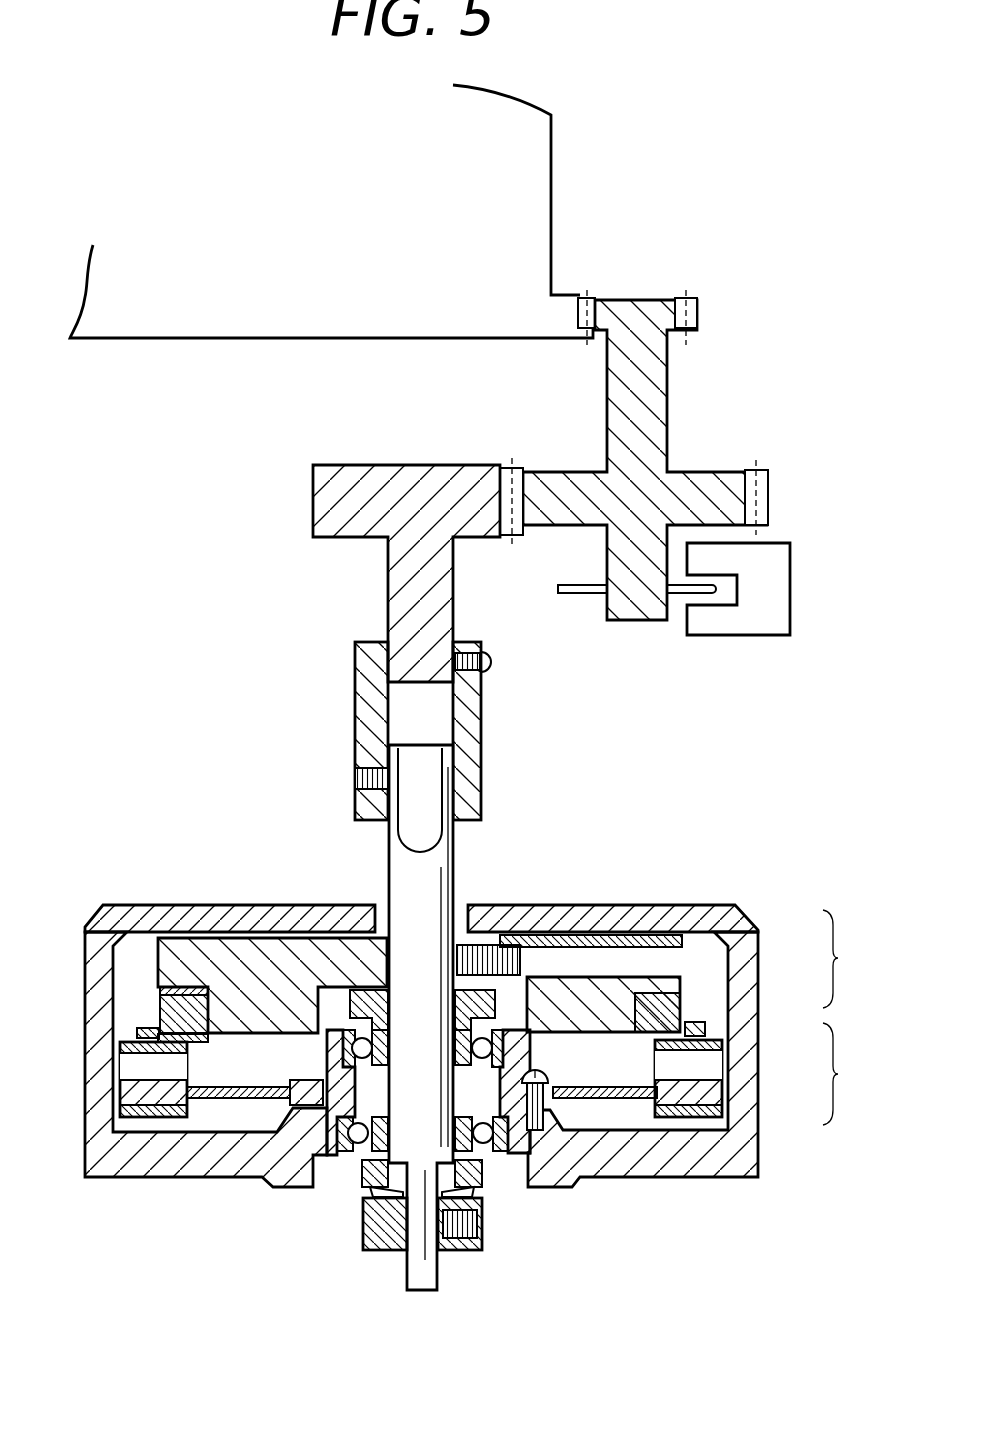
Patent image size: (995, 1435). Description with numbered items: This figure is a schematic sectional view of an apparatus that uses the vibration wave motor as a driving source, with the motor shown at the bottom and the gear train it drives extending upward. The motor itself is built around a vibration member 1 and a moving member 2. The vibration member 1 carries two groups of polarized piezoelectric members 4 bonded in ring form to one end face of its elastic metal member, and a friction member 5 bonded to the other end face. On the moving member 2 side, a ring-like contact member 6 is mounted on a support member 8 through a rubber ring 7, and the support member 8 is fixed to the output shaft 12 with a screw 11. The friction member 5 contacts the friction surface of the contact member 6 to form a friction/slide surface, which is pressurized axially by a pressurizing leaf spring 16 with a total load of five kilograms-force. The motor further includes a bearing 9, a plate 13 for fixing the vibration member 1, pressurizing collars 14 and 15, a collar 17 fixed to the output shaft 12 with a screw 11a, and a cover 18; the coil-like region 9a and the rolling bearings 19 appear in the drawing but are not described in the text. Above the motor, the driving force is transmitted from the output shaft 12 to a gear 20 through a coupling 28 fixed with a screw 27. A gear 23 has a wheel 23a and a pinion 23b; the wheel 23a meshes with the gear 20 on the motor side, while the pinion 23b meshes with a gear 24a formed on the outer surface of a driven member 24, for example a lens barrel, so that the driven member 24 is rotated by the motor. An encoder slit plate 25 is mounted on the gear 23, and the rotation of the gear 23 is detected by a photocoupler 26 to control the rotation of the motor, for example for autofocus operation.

The vibration member 1 is at (841, 1074).
The moving member 2 is at (841, 959).
The piezoelectric members 4 is at (727, 1117).
The friction member 5 is at (713, 1045).
The contact member 6 is at (700, 1028).
The rubber ring 7 is at (617, 982).
The support member 8 is at (683, 948).
The bearing 9 is at (708, 1082).
The coil 9a is at (130, 1063).
The screw 11 is at (500, 962).
The screw 11a is at (467, 1240).
The output shaft 12 is at (440, 853).
The plate 13 is at (702, 1163).
The pressurizing collar 14 is at (368, 992).
The pressurizing collar 15 is at (475, 1172).
The pressurizing leaf spring 16 is at (473, 1190).
The collar 17 is at (380, 1240).
The cover 18 is at (645, 905).
The bearing 19 is at (343, 1030).
The gear 20 is at (405, 480).
The gear 23 is at (658, 371).
The wheel 23a is at (752, 477).
The pinion 23b is at (687, 293).
The driven member 24 is at (538, 136).
The gear 24a is at (585, 293).
The encoder slit plate 25 is at (577, 598).
The photocoupler 26 is at (762, 620).
The screw 27 is at (380, 768).
The coupling 28 is at (468, 721).